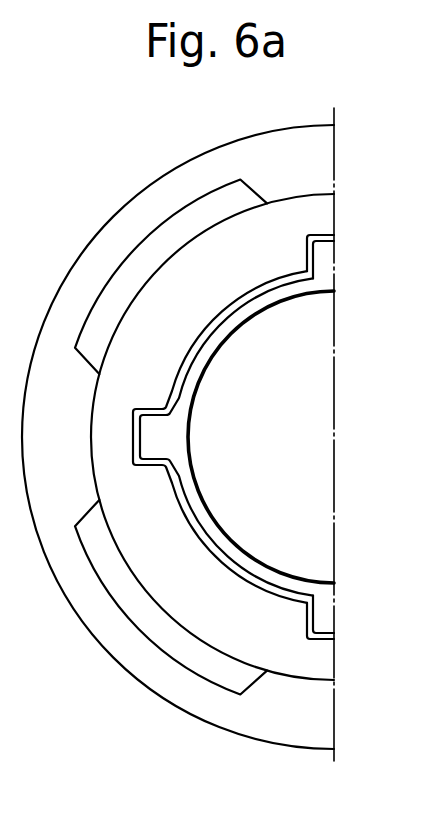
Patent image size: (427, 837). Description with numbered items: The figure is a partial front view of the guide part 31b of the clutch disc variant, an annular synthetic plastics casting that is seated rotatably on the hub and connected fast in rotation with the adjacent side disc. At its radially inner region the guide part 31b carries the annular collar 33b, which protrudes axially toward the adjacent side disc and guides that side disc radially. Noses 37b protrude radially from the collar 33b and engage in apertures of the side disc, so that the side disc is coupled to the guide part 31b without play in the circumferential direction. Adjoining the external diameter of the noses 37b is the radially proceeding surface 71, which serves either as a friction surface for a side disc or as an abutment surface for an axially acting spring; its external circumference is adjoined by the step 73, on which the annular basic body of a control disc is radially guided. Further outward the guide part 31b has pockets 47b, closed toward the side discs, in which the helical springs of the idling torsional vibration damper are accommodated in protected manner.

The guide part 31b is at (127, 672).
The annular collar 33b is at (223, 543).
The noses 37b is at (326, 249).
The pockets 47b is at (112, 573).
The radially proceeding surface 71 is at (158, 297).
The step 73 is at (298, 194).